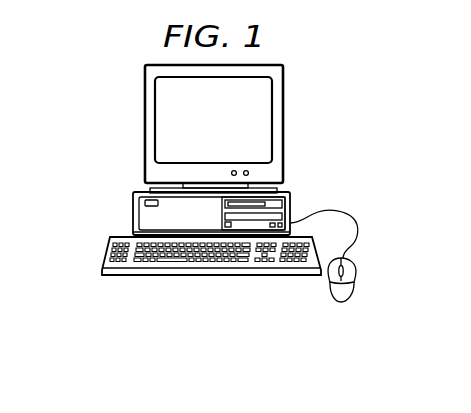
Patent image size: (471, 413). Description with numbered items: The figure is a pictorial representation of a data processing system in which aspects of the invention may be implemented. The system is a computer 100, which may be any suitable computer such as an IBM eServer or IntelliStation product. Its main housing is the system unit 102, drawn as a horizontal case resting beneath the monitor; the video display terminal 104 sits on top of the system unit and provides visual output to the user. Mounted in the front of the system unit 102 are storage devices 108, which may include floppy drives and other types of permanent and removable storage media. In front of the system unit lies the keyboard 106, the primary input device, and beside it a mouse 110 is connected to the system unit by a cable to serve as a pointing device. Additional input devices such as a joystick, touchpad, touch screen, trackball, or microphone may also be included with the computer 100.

The computer 100 is at (90, 115).
The system unit 102 is at (133, 210).
The video display terminal 104 is at (283, 120).
The keyboard 106 is at (128, 276).
The storage devices 108 is at (292, 206).
The mouse 110 is at (340, 302).